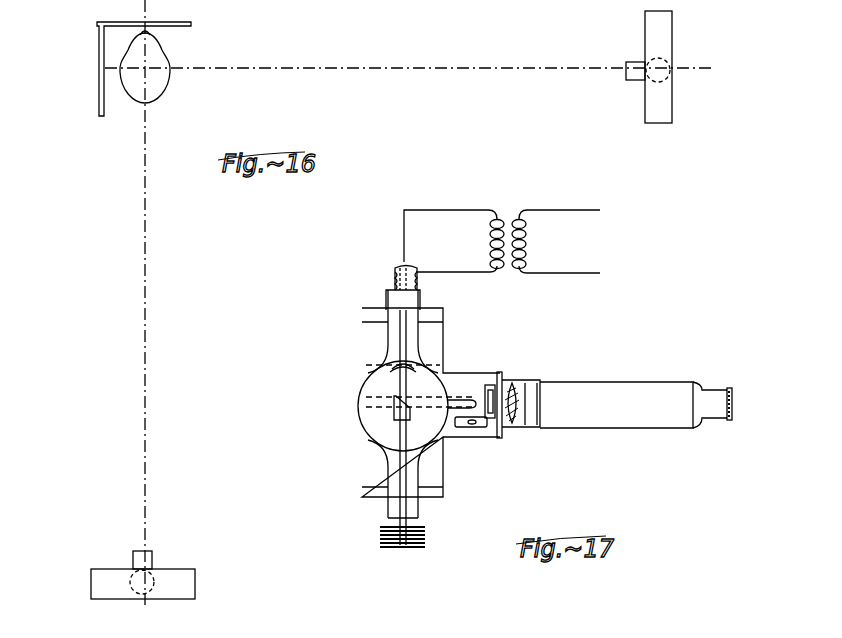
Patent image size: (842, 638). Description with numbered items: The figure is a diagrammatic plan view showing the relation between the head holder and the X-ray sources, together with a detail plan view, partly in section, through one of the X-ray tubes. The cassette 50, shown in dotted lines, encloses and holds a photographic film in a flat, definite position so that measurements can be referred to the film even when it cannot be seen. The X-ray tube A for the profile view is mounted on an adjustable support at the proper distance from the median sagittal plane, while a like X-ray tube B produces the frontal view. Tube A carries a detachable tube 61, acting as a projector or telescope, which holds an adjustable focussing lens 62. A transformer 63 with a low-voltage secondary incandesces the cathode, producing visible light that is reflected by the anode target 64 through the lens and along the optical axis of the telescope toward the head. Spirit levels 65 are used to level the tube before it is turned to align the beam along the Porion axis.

In FIG. 16, the cassette 50 is at (178, 27).
In FIG. 16, the X-ray tube A is at (653, 97).
In FIG. 17, the X-ray tube A is at (372, 384).
In FIG. 16, the X-ray tube B is at (170, 582).
In FIG. 17, the detachable tube 61 is at (598, 400).
In FIG. 17, the focussing lens 62 is at (520, 384).
In FIG. 17, the transformer 63 is at (507, 274).
In FIG. 17, the anode target 64 is at (394, 405).
In FIG. 17, the spirit levels 65 is at (492, 432).